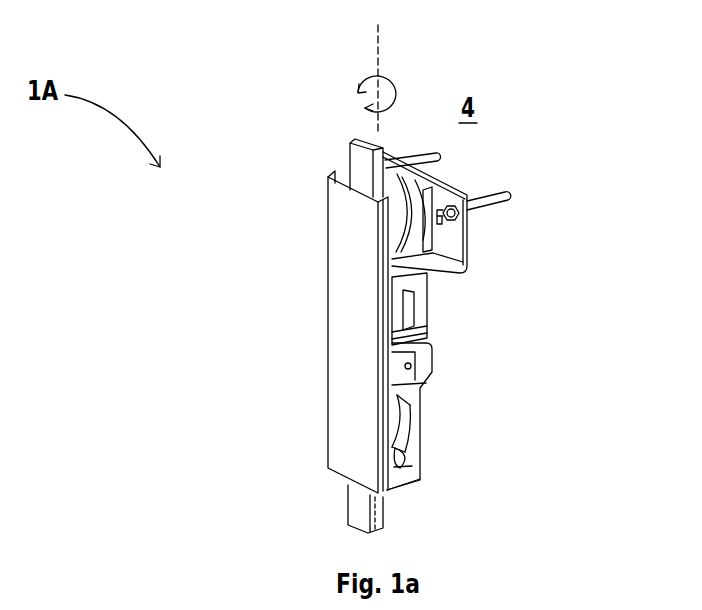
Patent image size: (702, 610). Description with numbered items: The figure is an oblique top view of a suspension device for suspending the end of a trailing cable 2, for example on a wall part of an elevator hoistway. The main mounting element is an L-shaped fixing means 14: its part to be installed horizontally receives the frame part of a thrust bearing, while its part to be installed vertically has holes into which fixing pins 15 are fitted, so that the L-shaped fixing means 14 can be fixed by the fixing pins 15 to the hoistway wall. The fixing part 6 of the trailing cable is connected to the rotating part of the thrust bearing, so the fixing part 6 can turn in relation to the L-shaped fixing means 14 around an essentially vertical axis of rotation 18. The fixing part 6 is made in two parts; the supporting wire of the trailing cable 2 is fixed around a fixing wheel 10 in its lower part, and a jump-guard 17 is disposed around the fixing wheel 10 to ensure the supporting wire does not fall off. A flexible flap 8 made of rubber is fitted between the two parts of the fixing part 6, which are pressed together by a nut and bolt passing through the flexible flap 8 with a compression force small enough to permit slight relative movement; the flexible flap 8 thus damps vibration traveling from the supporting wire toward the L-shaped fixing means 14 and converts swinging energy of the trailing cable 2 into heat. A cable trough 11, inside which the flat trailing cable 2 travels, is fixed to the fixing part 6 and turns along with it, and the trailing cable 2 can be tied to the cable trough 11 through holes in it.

The trailing cable 2 is at (358, 508).
The fixing part of the trailing cable 6 is at (443, 349).
The flexible flap 8 is at (432, 346).
The fixing wheel 10 is at (402, 460).
The cable trough 11 is at (347, 350).
The L-shaped fixing means 14 is at (468, 237).
The fixing pins 15 is at (440, 158).
The jump-guard 17 is at (405, 438).
The axis of rotation 18 is at (378, 51).